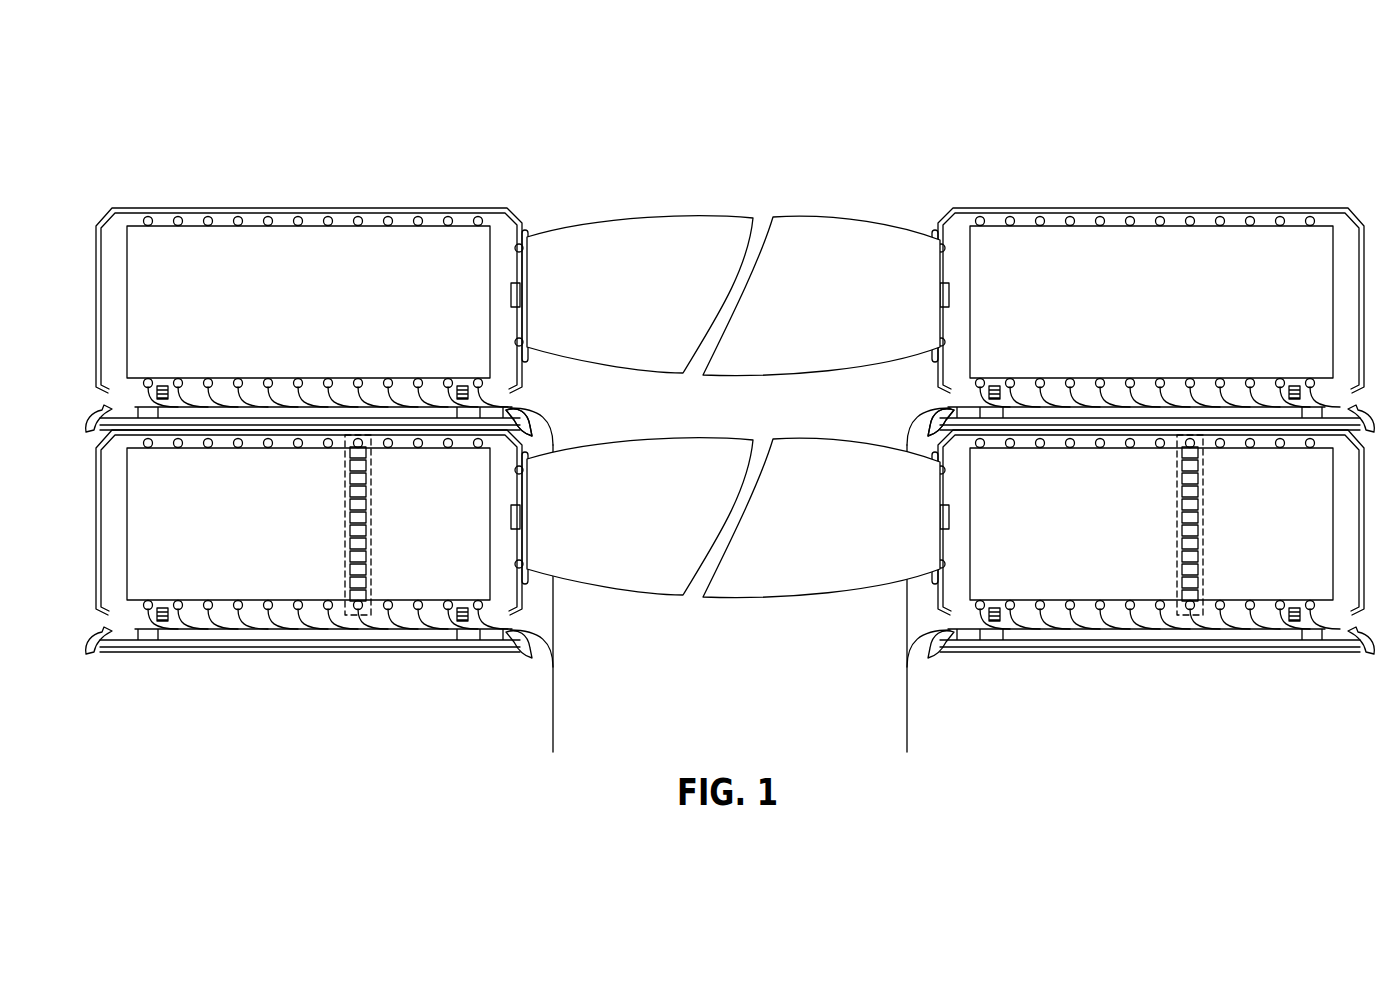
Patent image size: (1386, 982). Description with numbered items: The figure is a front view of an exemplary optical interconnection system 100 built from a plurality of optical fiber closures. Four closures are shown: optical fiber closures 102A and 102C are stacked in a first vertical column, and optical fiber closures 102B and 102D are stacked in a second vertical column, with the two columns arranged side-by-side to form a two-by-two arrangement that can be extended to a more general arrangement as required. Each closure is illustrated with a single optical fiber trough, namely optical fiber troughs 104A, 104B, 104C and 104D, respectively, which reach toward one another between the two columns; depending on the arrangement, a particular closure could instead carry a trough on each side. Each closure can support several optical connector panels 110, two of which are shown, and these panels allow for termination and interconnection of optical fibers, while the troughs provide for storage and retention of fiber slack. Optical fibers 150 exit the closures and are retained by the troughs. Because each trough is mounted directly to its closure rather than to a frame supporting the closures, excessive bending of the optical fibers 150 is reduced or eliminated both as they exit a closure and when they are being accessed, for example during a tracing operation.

The optical interconnection system 100 is at (486, 83).
The optical fiber closure 102A is at (332, 208).
The optical fiber closure 102B is at (1125, 208).
The optical fiber closure 102C is at (180, 652).
The optical fiber closure 102D is at (1088, 652).
The optical fiber trough 104A is at (648, 216).
The optical fiber trough 104B is at (812, 216).
The optical fiber trough 104C is at (645, 598).
The optical fiber trough 104D is at (802, 600).
The optical connector panel 110 is at (343, 490).
The optical fibers 150 is at (545, 420).